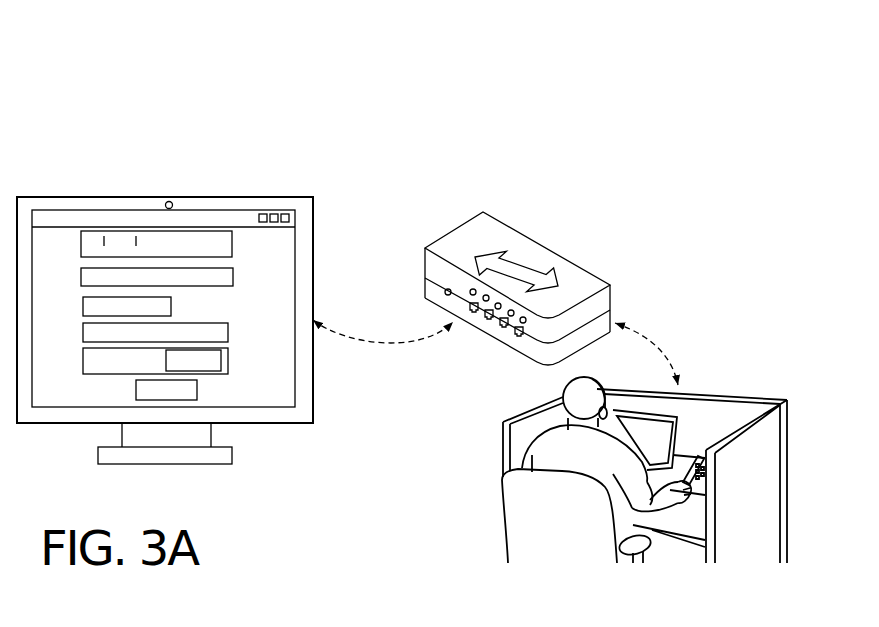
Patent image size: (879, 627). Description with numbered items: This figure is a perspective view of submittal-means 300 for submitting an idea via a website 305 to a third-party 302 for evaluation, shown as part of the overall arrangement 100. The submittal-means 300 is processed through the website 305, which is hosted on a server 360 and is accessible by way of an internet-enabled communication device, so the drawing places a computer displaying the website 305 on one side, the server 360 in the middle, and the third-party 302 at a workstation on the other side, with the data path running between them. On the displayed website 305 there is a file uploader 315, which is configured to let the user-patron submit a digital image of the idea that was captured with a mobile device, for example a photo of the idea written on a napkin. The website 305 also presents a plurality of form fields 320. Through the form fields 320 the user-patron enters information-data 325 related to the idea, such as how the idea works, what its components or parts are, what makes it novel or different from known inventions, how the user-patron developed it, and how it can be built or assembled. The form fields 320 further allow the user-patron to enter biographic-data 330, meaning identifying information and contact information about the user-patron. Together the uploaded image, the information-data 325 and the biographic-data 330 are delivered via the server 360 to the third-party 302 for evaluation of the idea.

The system 100 is at (637, 85).
The submittal-means 300 is at (199, 391).
The third-party 302 is at (693, 378).
The website 305 is at (272, 287).
The file uploader 315 is at (223, 361).
The form fields 320 is at (192, 250).
The information-data 325 is at (104, 243).
The biographic-data 330 is at (136, 243).
The server 360 is at (550, 245).